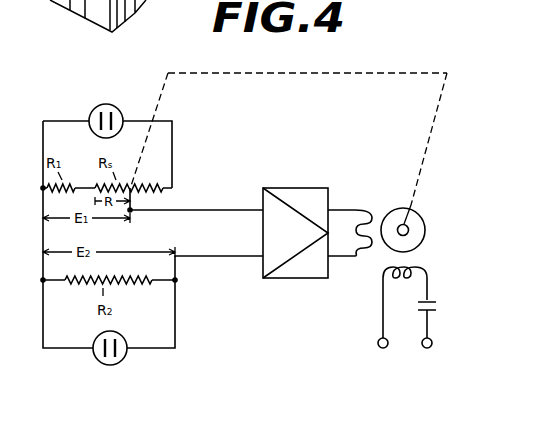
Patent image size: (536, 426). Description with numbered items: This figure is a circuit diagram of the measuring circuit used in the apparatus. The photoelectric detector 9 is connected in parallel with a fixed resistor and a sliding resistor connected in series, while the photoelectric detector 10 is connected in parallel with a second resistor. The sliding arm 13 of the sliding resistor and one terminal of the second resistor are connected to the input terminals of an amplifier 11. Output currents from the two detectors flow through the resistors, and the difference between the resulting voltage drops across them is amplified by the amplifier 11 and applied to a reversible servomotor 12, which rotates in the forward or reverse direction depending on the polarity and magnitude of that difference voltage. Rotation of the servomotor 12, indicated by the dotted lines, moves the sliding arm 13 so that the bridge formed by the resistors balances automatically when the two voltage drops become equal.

The photoelectric detector 9 is at (102, 104).
The photoelectric detector 10 is at (117, 367).
The amplifier 11 is at (280, 188).
The reversible servomotor 12 is at (390, 208).
The sliding arm of the sliding resistor 13 is at (133, 207).